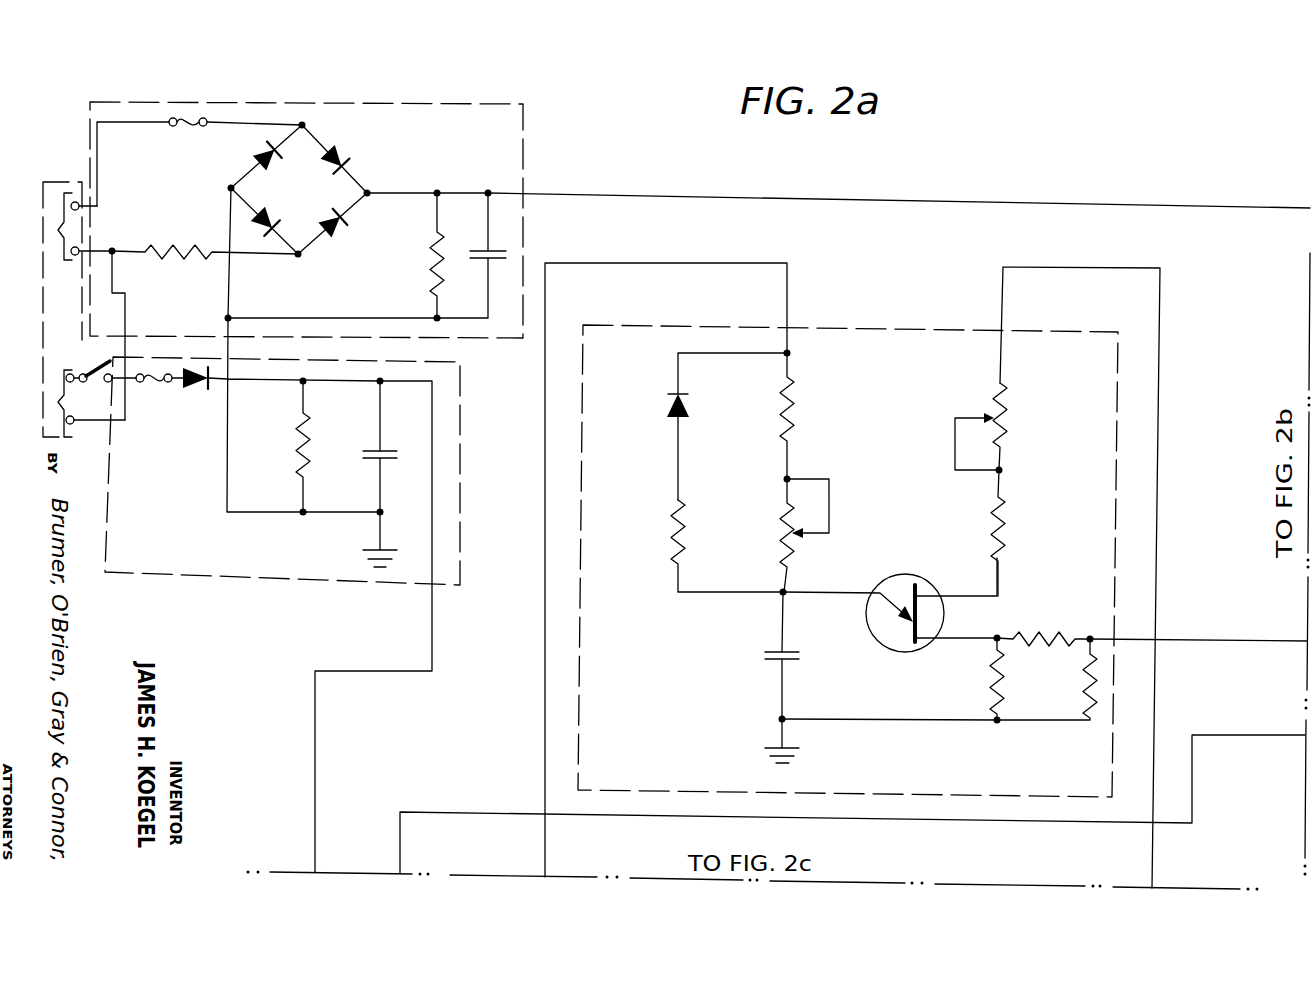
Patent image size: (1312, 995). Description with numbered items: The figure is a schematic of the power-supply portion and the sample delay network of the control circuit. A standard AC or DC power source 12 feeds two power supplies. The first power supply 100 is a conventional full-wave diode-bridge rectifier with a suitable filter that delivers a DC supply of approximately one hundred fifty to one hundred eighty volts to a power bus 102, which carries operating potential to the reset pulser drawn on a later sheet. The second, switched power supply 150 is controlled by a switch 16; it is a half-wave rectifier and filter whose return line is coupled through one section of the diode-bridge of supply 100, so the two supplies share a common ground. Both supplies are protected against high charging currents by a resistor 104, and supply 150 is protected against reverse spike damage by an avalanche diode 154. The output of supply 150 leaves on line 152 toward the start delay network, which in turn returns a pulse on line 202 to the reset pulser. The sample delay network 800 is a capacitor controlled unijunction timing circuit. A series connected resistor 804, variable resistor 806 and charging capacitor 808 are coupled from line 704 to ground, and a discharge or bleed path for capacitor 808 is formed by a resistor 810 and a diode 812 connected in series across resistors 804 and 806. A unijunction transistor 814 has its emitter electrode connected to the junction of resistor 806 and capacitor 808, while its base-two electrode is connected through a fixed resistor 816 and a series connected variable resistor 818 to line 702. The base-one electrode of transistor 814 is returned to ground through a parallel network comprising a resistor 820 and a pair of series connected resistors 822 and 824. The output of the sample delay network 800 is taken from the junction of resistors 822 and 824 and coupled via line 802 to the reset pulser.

The power source 12 is at (62, 182).
The switch 16 is at (92, 382).
The power supply 100 is at (262, 103).
The power bus 102 is at (573, 195).
The resistor 104 is at (178, 246).
The power supply 150 is at (305, 585).
The line 152 is at (431, 628).
The avalanche diode 154 is at (194, 393).
The line 202 is at (398, 833).
The line 702 is at (1148, 838).
The line 704 is at (545, 842).
The sample delay network 800 is at (900, 326).
The line 802 is at (1283, 640).
The resistor 804 is at (796, 410).
The variable resistor 806 is at (794, 556).
The charging capacitor 808 is at (764, 650).
The resistor 810 is at (669, 530).
The diode 812 is at (667, 407).
The unijunction transistor 814 is at (873, 640).
The fixed resistor 816 is at (1010, 526).
The variable resistor 818 is at (1008, 420).
The resistor 820 is at (990, 680).
The resistor 822 is at (1038, 632).
The resistor 824 is at (1084, 690).